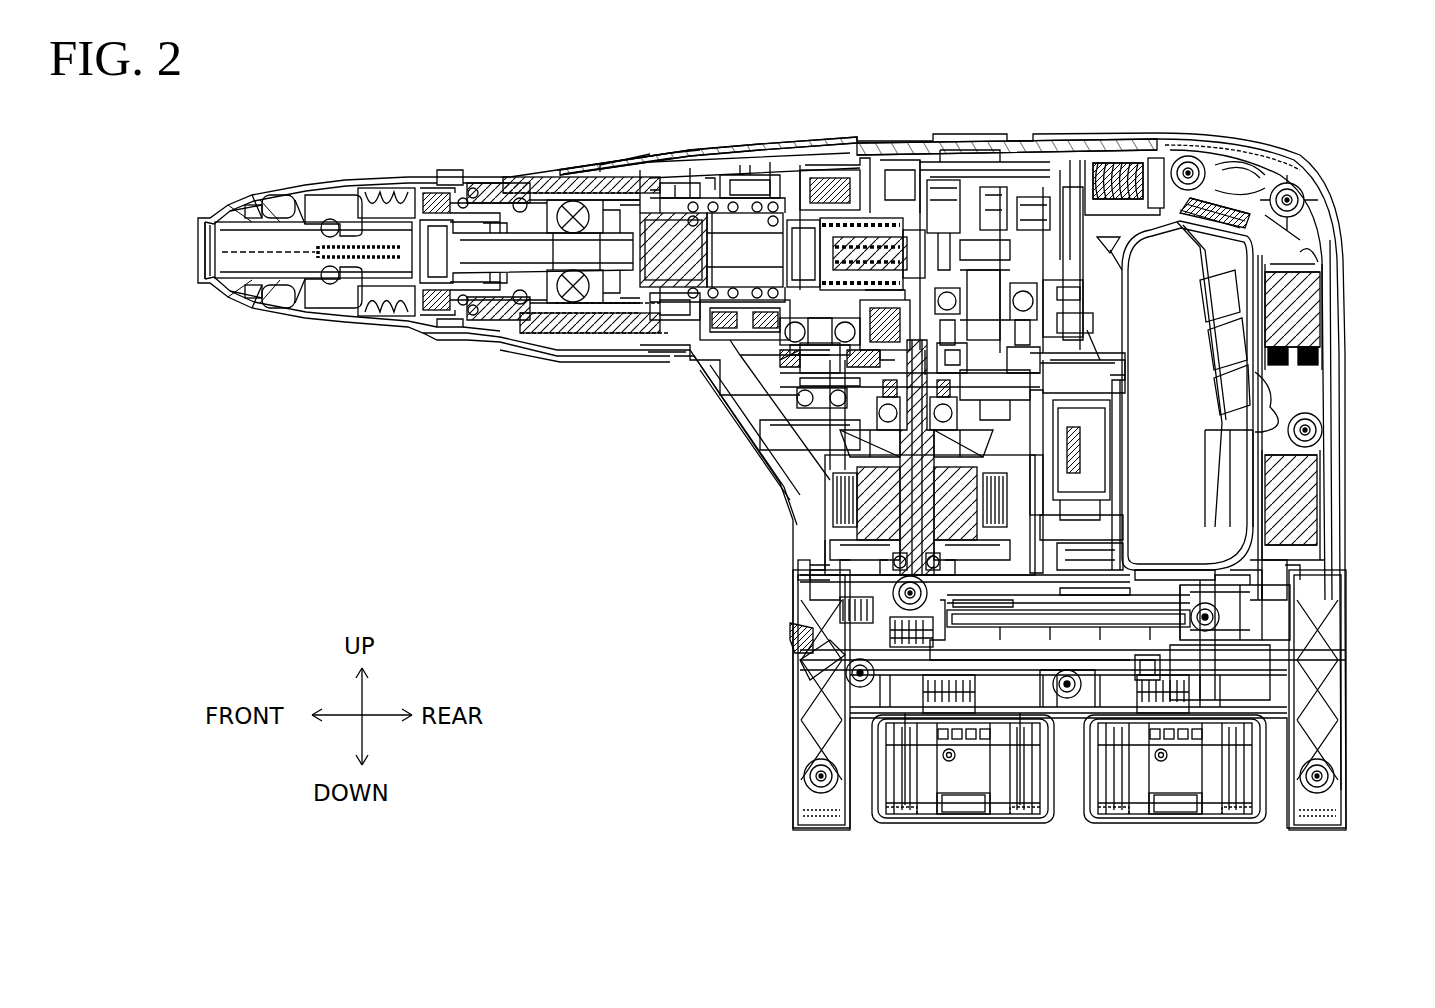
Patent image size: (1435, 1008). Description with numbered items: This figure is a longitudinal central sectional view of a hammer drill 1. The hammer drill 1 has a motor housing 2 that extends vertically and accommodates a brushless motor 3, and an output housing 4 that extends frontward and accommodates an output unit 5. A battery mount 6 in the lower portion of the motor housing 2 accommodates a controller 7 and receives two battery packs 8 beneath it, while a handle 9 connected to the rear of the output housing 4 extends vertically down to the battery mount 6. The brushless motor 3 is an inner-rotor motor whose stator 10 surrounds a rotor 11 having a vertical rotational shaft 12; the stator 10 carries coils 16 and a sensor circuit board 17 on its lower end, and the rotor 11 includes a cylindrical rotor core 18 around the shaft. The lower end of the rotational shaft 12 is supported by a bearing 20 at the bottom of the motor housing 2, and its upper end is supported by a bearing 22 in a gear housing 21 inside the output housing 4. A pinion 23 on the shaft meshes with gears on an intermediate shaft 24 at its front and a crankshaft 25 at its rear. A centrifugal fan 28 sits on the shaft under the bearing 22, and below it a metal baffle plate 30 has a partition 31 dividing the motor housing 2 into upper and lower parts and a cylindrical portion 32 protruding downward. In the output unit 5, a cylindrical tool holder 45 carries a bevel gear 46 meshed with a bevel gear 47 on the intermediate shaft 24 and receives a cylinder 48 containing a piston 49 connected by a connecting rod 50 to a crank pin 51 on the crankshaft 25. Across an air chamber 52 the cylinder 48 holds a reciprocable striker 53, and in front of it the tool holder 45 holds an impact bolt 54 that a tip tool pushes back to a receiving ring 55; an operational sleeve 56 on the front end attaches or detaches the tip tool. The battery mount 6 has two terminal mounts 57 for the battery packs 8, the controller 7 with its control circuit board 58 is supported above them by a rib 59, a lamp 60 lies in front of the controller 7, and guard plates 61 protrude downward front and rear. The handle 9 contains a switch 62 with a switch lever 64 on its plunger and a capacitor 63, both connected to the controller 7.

The hammer drill 1 is at (1028, 105).
The motor housing 2 is at (810, 520).
The brushless motor 3 is at (1095, 380).
The output housing 4 is at (556, 172).
The output unit 5 is at (620, 160).
The battery mount 6 is at (1190, 572).
The controller 7 is at (1158, 570).
The battery pack 8 is at (975, 800).
The handle 9 is at (1347, 430).
The stator 10 is at (745, 433).
The rotor 11 is at (1088, 306).
The rotational shaft 12 is at (988, 250).
The coils 16 is at (842, 495).
The sensor circuit board 17 is at (808, 565).
The rotor core 18 is at (838, 545).
The bearing 20 is at (840, 595).
The gear housing 21 is at (700, 358).
The bearing 22 is at (848, 345).
The pinion 23 is at (878, 320).
The intermediate shaft 24 is at (812, 330).
The crankshaft 25 is at (1032, 215).
The centrifugal fan 28 is at (1060, 285).
The baffle plate 30 is at (766, 240).
The partition 31 is at (762, 448).
The cylindrical portion 32 is at (1065, 445).
The tool holder 45 is at (533, 178).
The bevel gear 46 is at (778, 190).
The bevel gear 47 is at (835, 300).
The cylinder 48 is at (740, 205).
The piston 49 is at (805, 250).
The connecting rod 50 is at (913, 235).
The crank pin 51 is at (947, 230).
The air chamber 52 is at (722, 235).
The striker 53 is at (655, 235).
The impact bolt 54 is at (490, 250).
The receiving ring 55 is at (560, 336).
The operational sleeve 56 is at (445, 172).
The terminal mount 57 is at (908, 805).
The control circuit board 58 is at (1178, 610).
The rib 59 is at (1128, 593).
The lamp 60 is at (790, 632).
The guard plate 61 is at (795, 745).
The switch 62 is at (1305, 310).
The capacitor 63 is at (1320, 535).
The switch lever 64 is at (1208, 312).